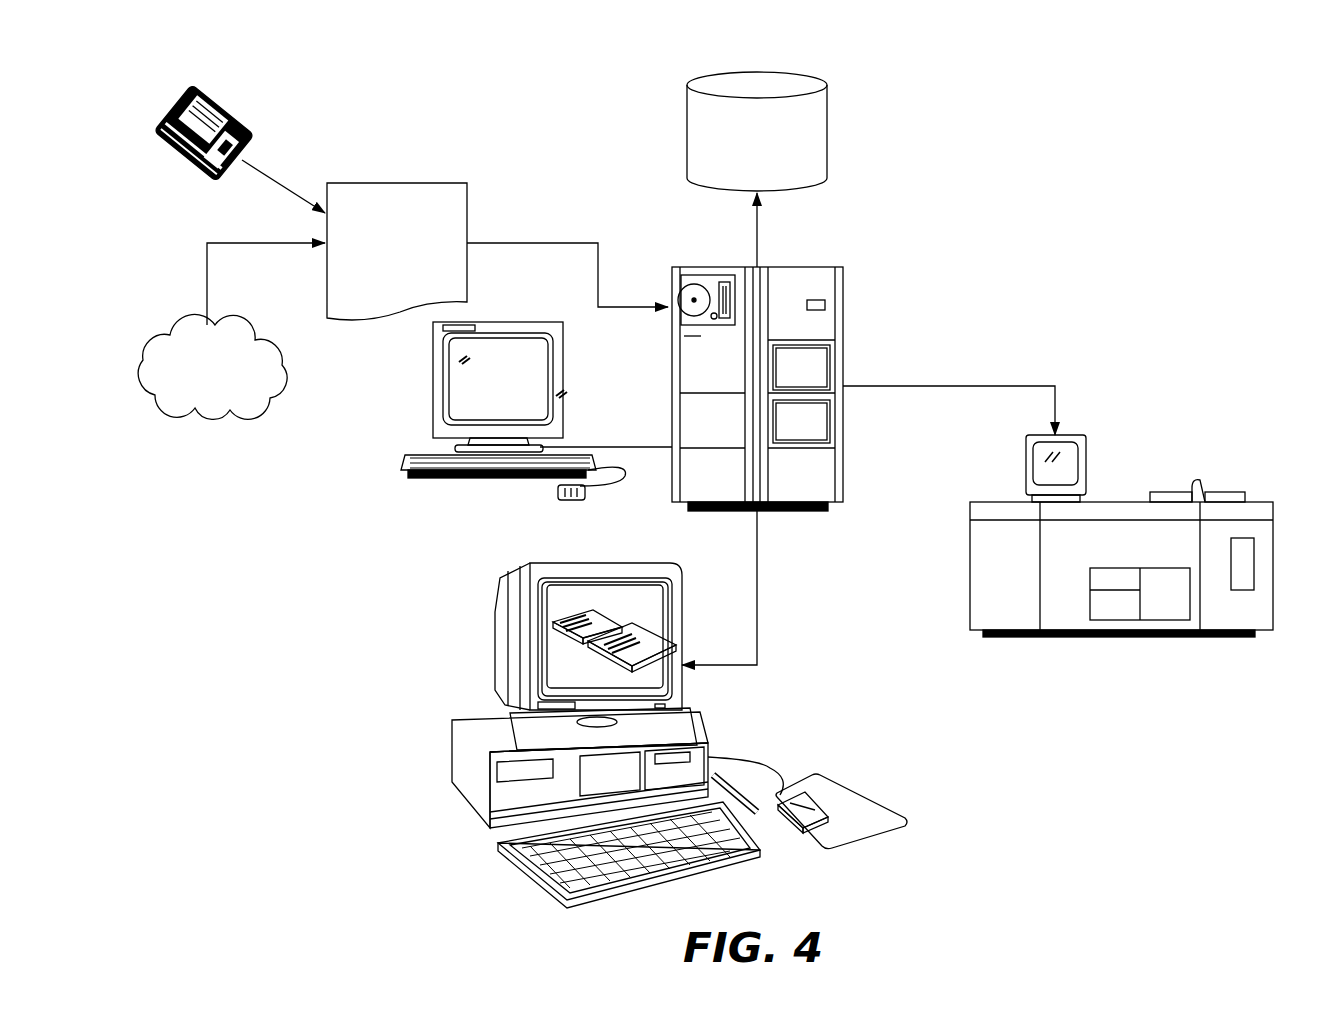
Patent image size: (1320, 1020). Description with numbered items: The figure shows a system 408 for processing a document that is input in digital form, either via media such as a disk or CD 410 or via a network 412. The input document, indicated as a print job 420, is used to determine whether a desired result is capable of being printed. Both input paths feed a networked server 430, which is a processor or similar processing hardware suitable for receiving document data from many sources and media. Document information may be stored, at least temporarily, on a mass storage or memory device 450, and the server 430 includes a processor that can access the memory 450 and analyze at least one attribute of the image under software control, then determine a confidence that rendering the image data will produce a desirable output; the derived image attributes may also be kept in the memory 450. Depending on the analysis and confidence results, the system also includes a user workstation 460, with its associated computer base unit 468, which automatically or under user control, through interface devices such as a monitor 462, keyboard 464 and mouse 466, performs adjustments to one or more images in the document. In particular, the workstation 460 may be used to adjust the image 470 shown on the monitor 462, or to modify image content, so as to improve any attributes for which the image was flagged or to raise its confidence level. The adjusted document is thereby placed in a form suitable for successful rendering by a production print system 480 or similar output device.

The system 408 is at (1143, 243).
The disk or CD 410 is at (222, 108).
The network 412 is at (205, 417).
The print job 420 is at (432, 182).
The networked server 430 is at (690, 268).
The memory device 450 is at (688, 130).
The user workstation 460 is at (447, 733).
The monitor 462 is at (582, 636).
The keyboard 464 is at (495, 845).
The mouse 466 is at (810, 810).
The computer base unit 468 is at (580, 768).
The image 470 is at (627, 635).
The production print system 480 is at (1132, 500).